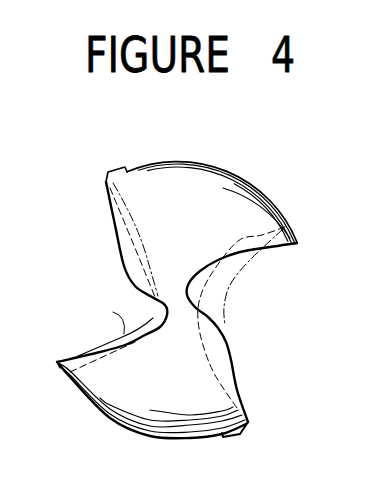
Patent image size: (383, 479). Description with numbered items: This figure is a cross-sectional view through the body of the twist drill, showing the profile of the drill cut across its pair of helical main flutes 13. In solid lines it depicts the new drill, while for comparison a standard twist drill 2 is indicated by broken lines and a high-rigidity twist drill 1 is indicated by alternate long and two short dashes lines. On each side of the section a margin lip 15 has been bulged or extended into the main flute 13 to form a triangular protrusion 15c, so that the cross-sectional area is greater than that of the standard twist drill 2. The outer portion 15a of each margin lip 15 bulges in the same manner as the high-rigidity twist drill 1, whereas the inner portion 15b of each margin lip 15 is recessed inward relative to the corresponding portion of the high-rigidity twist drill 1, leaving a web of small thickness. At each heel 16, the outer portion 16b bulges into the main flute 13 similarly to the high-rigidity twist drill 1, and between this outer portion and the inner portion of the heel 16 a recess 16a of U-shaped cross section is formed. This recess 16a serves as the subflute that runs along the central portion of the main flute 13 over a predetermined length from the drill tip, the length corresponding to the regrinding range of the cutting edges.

The high-rigidity twist drill 1 is at (113, 312).
The standard twist drill 2 is at (145, 255).
The main flute 13 is at (108, 293).
The margin lip 15 is at (238, 383).
The outer portion of margin lip 15a is at (238, 407).
The inner portion of margin lip 15b is at (194, 290).
The triangular protrusion 15c is at (223, 355).
The heel 16 is at (239, 257).
The recess 16a is at (122, 341).
The outer portion of heel 16b is at (291, 244).